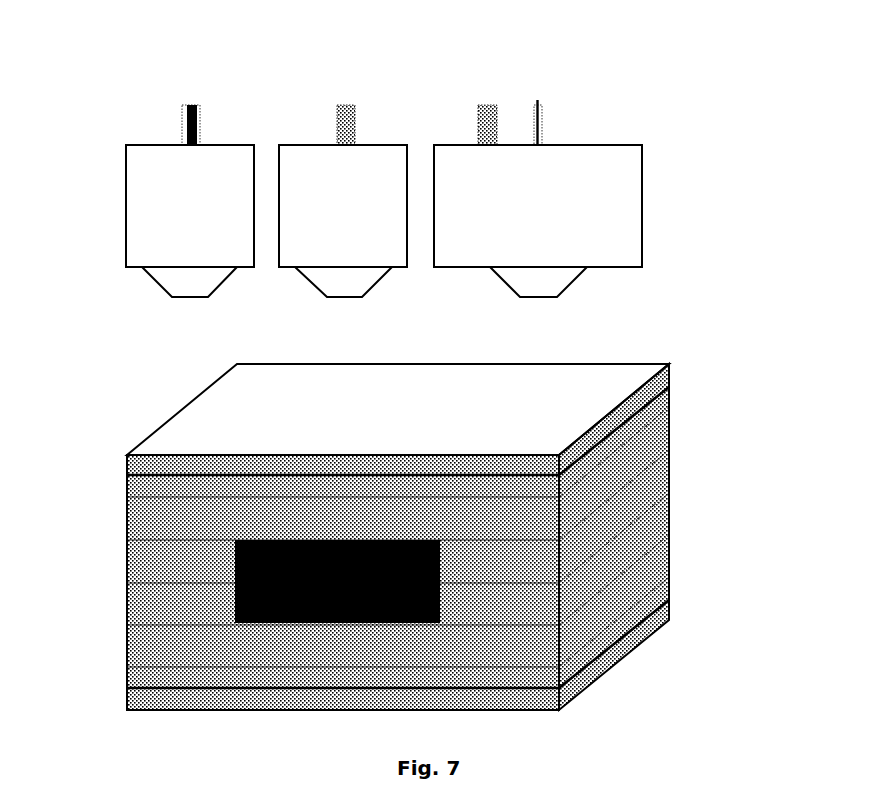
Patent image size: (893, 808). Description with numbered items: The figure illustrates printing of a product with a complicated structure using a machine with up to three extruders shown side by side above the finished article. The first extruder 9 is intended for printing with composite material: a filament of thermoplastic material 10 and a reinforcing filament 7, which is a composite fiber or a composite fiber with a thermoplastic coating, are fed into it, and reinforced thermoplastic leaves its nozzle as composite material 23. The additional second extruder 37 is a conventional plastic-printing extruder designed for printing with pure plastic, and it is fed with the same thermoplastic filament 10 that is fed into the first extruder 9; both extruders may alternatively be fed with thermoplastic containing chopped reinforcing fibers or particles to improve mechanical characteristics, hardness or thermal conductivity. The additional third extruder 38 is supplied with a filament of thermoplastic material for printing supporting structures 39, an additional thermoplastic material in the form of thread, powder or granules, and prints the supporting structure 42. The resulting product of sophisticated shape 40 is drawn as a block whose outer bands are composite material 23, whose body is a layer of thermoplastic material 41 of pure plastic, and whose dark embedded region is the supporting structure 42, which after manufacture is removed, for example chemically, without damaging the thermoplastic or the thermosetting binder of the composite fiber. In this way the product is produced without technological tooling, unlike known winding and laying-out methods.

The reinforcing filament 7 is at (541, 137).
The extruder 9 is at (597, 145).
The filament of thermoplastic material 10 is at (345, 125).
The composite material 23 is at (672, 597).
The additional second extruder 37 is at (402, 145).
The additional third extruder 38 is at (242, 145).
The filament of thermoplastic material for printing supporting structures 39 is at (190, 103).
The product of sophisticated shape 40 is at (628, 364).
The layer of thermoplastic material 41 is at (127, 513).
The supporting structure 42 is at (265, 540).